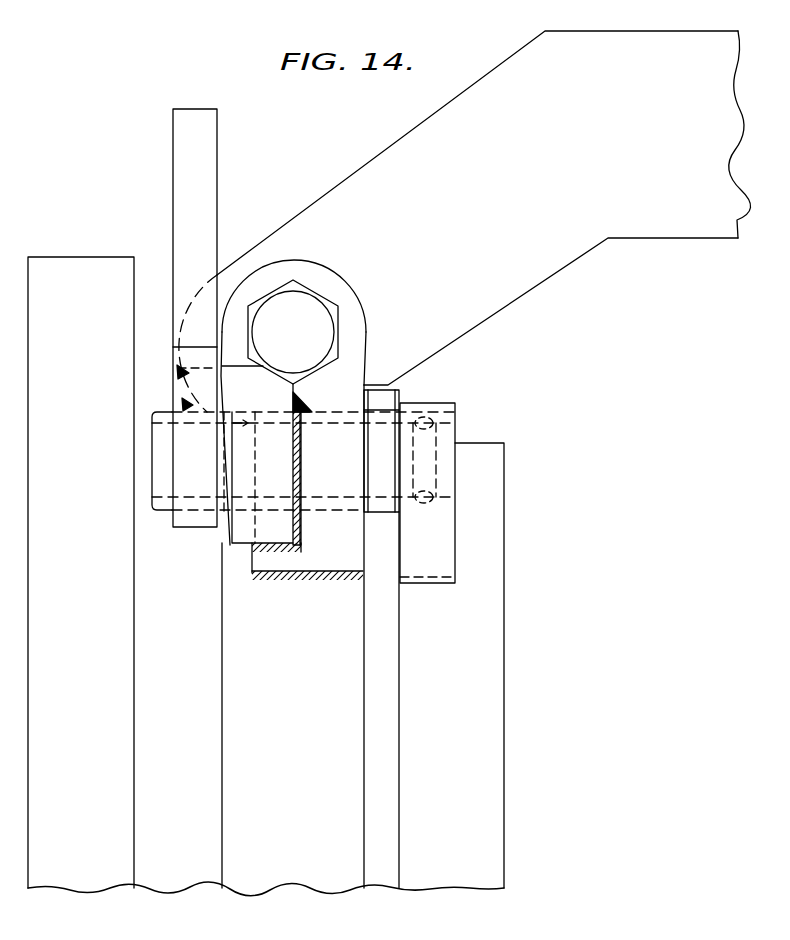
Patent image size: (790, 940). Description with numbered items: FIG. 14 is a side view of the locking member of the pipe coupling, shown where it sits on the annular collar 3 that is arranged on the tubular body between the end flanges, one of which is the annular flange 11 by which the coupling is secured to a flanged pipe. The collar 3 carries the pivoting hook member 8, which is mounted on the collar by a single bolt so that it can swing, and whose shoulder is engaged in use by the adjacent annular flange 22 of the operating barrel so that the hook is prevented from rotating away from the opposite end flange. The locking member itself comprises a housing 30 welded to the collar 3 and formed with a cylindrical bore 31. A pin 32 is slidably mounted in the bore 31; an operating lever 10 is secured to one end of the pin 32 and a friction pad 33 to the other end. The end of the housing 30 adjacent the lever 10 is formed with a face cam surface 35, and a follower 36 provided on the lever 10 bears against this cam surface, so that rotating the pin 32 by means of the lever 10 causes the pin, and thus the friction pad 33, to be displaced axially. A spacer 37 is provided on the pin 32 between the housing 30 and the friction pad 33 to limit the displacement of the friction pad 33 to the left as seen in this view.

The annular collar 3 is at (309, 650).
The hook member 8 is at (590, 146).
The operating lever 10 is at (192, 152).
The annular flange 11 is at (100, 631).
The annular flange 22 is at (388, 651).
The housing 30 is at (358, 541).
The cylindrical bore 31 is at (372, 427).
The pin 32 is at (163, 486).
The friction pad 33 is at (437, 556).
The face cam surface 35 is at (228, 518).
The follower 36 is at (215, 374).
The spacer 37 is at (386, 504).